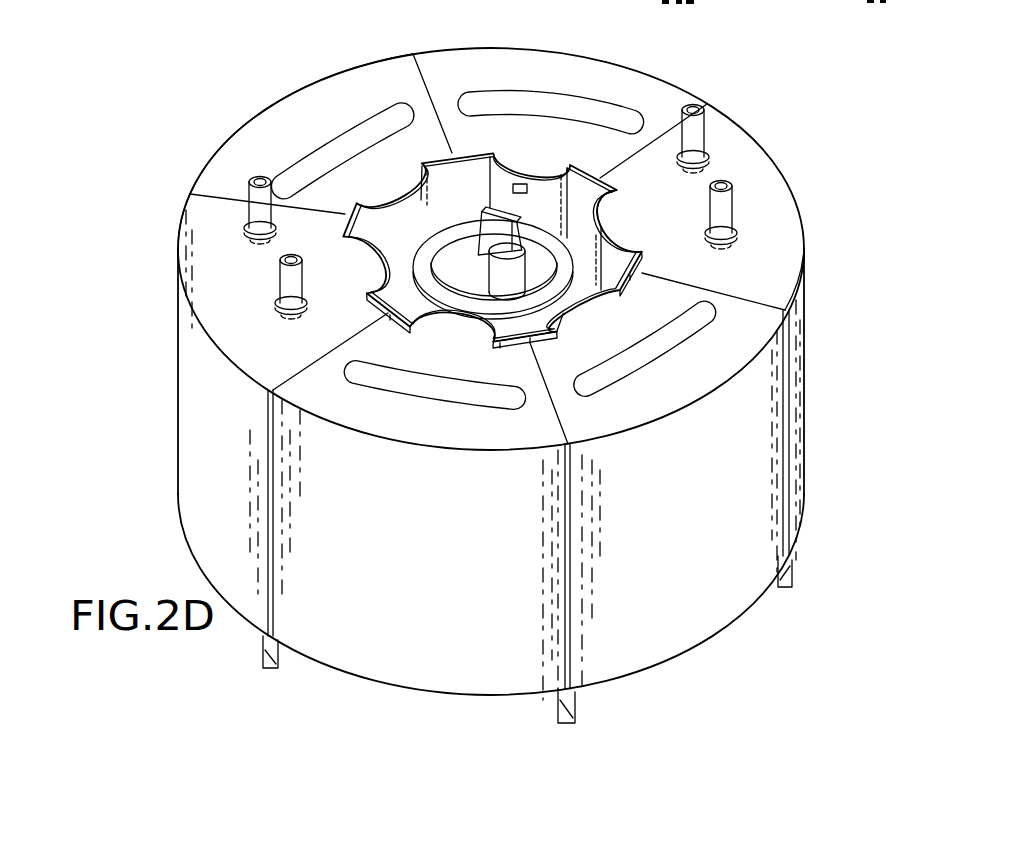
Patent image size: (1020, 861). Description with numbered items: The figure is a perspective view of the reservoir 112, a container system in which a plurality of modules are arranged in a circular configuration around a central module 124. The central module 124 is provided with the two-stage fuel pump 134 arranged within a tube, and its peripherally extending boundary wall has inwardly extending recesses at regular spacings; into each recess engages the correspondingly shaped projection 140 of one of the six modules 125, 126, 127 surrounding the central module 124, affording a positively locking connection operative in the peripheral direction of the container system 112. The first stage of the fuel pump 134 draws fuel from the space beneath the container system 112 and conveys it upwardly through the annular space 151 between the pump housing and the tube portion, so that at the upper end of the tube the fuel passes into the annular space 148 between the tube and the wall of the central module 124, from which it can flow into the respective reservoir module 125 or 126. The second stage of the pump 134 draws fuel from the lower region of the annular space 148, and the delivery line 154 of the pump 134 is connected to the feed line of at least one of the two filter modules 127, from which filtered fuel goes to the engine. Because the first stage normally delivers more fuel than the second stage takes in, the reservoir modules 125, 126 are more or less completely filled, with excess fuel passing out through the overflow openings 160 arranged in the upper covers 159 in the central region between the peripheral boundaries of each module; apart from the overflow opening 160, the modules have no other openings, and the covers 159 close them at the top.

The reservoir 112 is at (582, 46).
The central module 124 is at (552, 190).
The reservoir module 125 is at (595, 662).
The reservoir module 126 is at (258, 137).
The filter module 127 is at (218, 282).
The two-stage fuel pump 134 is at (585, 232).
The projection 140 is at (607, 230).
The annular space 148 is at (483, 196).
The annular space 151 is at (443, 237).
The delivery line 154 is at (507, 280).
The upper cover 159 is at (323, 98).
The overflow opening 160 is at (397, 392).